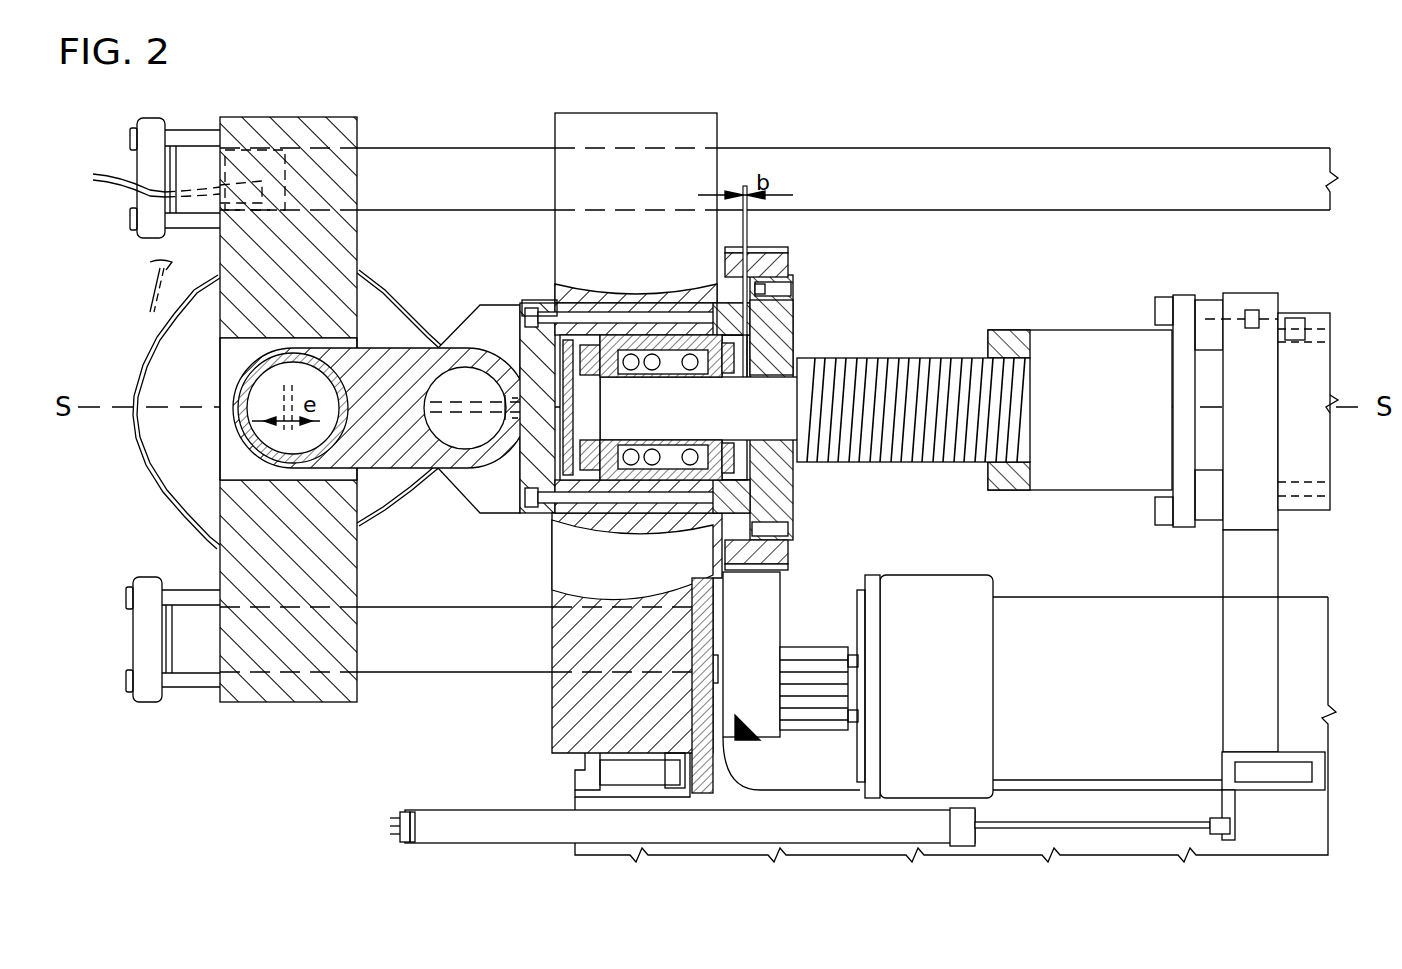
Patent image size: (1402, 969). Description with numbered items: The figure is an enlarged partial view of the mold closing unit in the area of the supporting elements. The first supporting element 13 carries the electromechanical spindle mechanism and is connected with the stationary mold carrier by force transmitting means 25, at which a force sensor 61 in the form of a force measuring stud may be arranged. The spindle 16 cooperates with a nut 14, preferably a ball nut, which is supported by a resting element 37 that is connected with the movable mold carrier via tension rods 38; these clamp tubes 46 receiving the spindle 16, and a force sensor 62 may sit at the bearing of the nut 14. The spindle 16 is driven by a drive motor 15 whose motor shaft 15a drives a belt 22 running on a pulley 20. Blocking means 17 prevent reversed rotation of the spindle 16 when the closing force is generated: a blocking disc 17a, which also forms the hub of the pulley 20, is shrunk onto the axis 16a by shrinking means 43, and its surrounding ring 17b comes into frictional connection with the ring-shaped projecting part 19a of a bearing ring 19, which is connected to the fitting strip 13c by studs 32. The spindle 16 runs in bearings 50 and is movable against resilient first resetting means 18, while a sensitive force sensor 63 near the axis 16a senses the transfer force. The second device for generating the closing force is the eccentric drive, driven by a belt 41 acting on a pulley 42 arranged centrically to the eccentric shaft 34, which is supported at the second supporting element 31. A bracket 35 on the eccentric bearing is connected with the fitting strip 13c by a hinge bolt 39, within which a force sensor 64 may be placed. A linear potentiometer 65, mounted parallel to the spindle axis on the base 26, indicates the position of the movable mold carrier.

The first supporting element 13 is at (620, 125).
The fitting strip 13c is at (484, 303).
The nut 14 is at (1082, 355).
The drive motor 15 is at (1029, 685).
The motor shaft 15a is at (855, 685).
The spindle 16 is at (912, 380).
The axis of the spindle 16a is at (700, 408).
The blocking means 17 is at (795, 504).
The blocking disc 17a is at (778, 322).
The surrounding ring 17b is at (792, 288).
The first resetting means 18 is at (584, 378).
The bearing ring 19 is at (712, 303).
The ring-shaped projecting part 19a is at (716, 300).
The pulley 20 is at (782, 262).
The belt 22 is at (762, 252).
The force transmitting means 25 is at (1165, 163).
The base plate 26 is at (1280, 812).
The second supporting element 31 is at (298, 135).
The studs 32 is at (588, 318).
The eccentric shaft 34 is at (308, 380).
The bracket 35 is at (395, 458).
The resting element 37 is at (1252, 568).
The tension rods 38 is at (1298, 312).
The hinge bolt 39 is at (472, 408).
The belt 41 is at (156, 279).
The pulley 42 is at (148, 407).
The shrinking means 43 is at (712, 377).
The tubes 46 is at (1312, 368).
The bearings 50 is at (642, 377).
The force sensor 61 is at (258, 115).
The force sensor 62 is at (1262, 292).
The force sensor 63 is at (560, 300).
The force sensor 64 is at (504, 460).
The linear potentiometer 65 is at (415, 822).